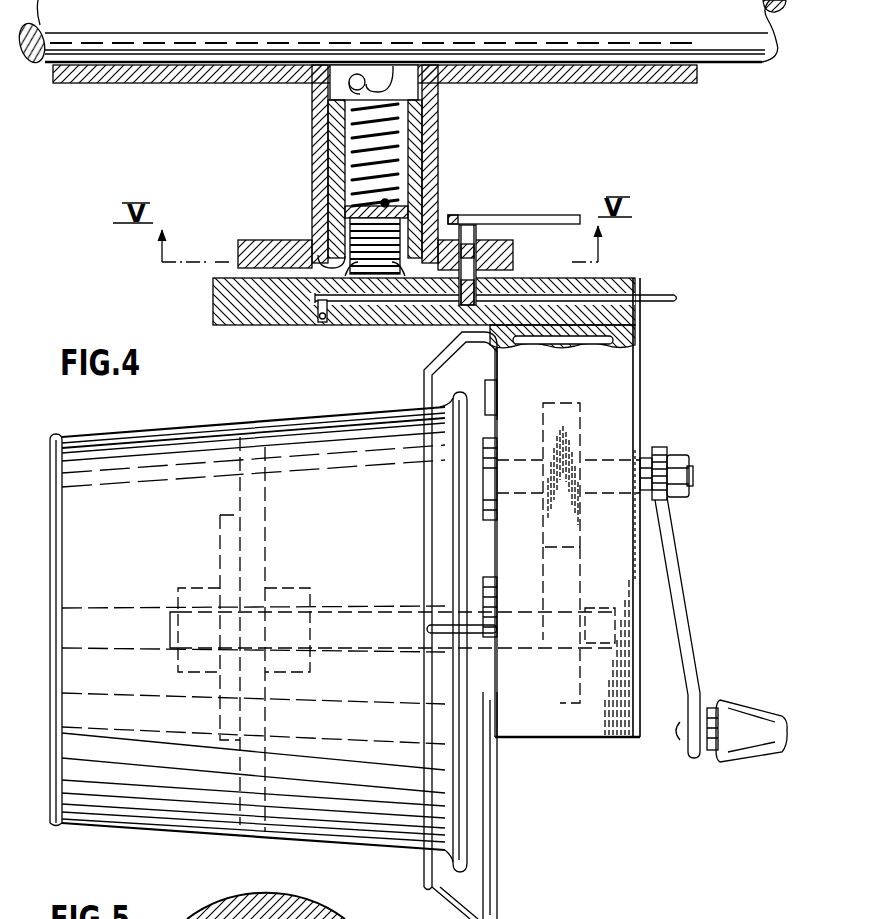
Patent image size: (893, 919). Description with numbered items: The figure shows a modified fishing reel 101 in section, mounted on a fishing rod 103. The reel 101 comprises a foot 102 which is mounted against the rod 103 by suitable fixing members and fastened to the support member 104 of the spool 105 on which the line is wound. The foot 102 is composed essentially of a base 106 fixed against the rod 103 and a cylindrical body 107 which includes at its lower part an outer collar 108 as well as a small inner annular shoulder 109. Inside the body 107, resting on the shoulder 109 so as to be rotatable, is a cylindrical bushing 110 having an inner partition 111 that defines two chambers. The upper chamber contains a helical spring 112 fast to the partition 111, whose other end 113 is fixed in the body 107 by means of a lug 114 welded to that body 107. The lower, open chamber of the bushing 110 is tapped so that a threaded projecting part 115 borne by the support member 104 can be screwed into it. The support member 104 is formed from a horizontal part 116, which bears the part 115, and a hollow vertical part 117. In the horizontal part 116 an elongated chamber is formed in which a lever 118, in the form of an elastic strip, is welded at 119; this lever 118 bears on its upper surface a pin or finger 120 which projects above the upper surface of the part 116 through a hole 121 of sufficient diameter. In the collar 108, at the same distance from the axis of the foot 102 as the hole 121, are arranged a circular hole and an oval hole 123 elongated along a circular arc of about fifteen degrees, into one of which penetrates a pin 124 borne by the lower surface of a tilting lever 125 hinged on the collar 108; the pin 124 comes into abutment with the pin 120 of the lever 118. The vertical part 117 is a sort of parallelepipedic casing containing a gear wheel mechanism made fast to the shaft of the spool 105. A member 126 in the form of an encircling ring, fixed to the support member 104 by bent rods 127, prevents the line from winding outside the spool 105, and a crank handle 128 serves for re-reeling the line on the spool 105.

The reel 101 is at (618, 530).
The foot 102 is at (436, 143).
The fishing rod 103 is at (728, 40).
The support member 104 is at (623, 424).
The spool 105 is at (110, 797).
The base 106 is at (618, 74).
The cylindrical body 107 is at (318, 149).
The outer collar 108 is at (256, 248).
The inner annular shoulder 109 is at (326, 268).
The cylindrical bushing 110 is at (327, 110).
The inner partition 111 is at (331, 262).
The spring 112 is at (398, 138).
The other end of the spring 113 is at (390, 76).
The lug 114 is at (358, 78).
The threaded projecting part 115 is at (403, 227).
The horizontal part 116 is at (620, 278).
The hollow vertical part 117 is at (624, 718).
The lever 118 is at (668, 297).
The weld 119 is at (327, 325).
The pin 120 is at (476, 287).
The hole 121 is at (445, 299).
The oval hole 123 is at (478, 250).
The pin 124 is at (478, 226).
The tilting lever 125 is at (559, 221).
The encircling ring 126 is at (427, 709).
The bent rods 127 is at (497, 838).
The crank handle 128 is at (678, 609).